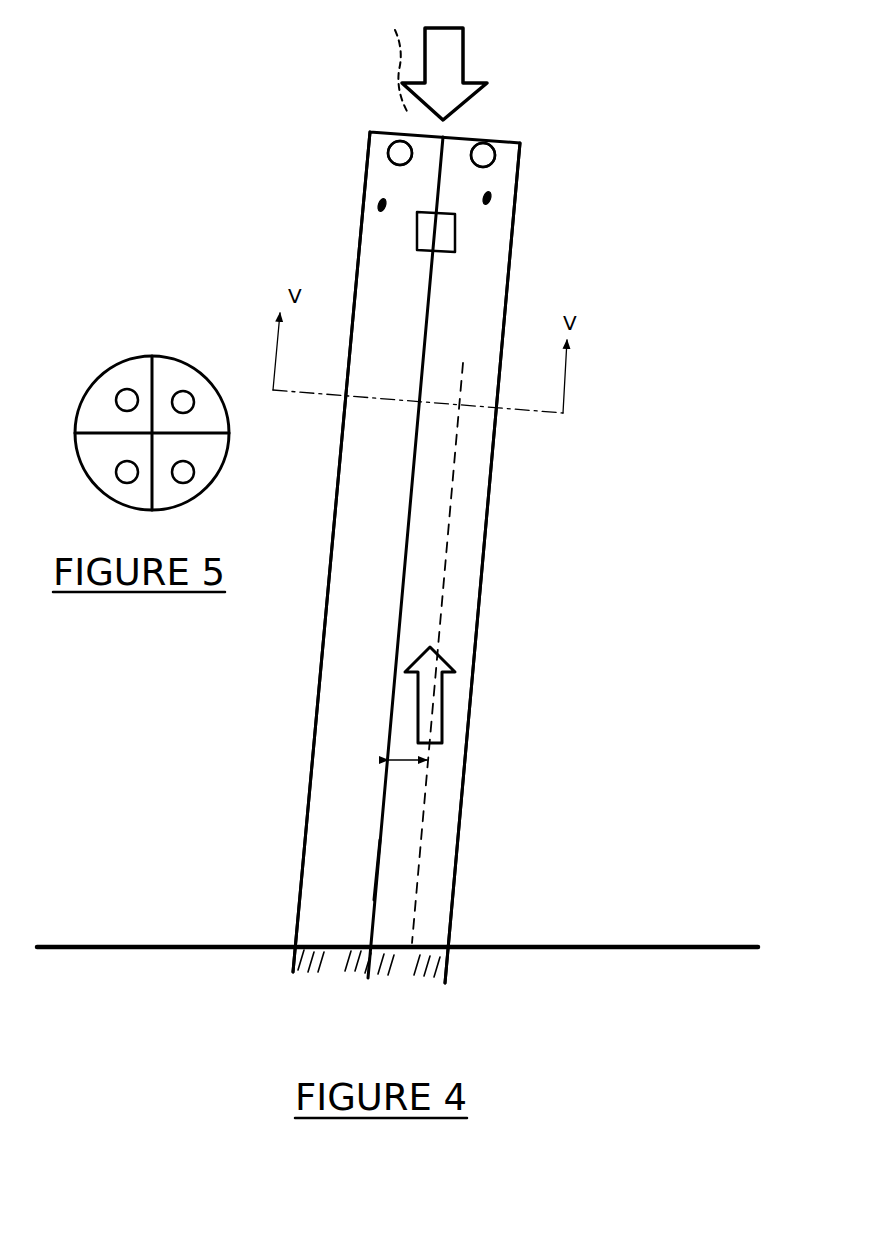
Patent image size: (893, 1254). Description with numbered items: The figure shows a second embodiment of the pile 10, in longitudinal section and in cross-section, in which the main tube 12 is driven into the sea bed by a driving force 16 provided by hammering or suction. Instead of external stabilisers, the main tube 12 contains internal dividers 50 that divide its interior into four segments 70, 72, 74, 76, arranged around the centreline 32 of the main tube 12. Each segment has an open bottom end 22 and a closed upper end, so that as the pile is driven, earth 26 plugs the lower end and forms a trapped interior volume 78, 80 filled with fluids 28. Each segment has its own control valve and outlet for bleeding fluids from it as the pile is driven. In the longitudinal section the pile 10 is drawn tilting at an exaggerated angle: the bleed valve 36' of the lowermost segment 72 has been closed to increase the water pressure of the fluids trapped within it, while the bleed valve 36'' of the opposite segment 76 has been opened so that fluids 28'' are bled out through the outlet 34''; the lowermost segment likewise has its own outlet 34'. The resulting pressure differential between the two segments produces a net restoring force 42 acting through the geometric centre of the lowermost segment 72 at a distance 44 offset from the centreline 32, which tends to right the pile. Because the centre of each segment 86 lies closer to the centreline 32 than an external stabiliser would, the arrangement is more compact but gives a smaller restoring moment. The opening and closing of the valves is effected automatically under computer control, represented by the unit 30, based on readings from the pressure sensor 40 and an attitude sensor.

In FIG. 4, the pile 10 is at (562, 108).
In FIG. 4, the main tube 12 is at (517, 235).
In FIG. 5, the main tube 12 is at (78, 400).
In FIG. 4, the driving force 16 is at (453, 47).
In FIG. 4, the open bottom end 22 is at (325, 980).
In FIG. 4, the earth 26 is at (369, 964).
In FIG. 4, the fluids 28 is at (422, 642).
In FIG. 4, the bled fluids 28'' is at (359, 69).
In FIG. 4, the sensor / control unit 30 is at (436, 232).
In FIG. 4, the centreline 32 is at (377, 857).
In FIG. 4, the outlet 34' is at (502, 127).
In FIG. 4, the outlet 34'' is at (381, 127).
In FIG. 4, the bleed valve 36' is at (528, 153).
In FIG. 4, the bleed valve 36'' is at (359, 173).
In FIG. 4, the pressure sensor 40 is at (490, 200).
In FIG. 4, the net restoring force 42 is at (442, 705).
In FIG. 4, the distance 44 is at (403, 765).
In FIG. 4, the internal dividers 50 is at (405, 518).
In FIG. 5, the internal dividers 50 is at (155, 380).
In FIG. 5, the segment 70 is at (114, 380).
In FIG. 4, the lowermost segment 72 is at (465, 622).
In FIG. 5, the lowermost segment 72 is at (178, 370).
In FIG. 5, the segment 74 is at (213, 462).
In FIG. 4, the opposite segment 76 is at (333, 773).
In FIG. 5, the opposite segment 76 is at (100, 470).
In FIG. 4, the trapped interior volume 78 is at (378, 604).
In FIG. 4, the trapped interior volume 80 is at (480, 320).
In FIG. 4, the segment centre 86 is at (420, 845).